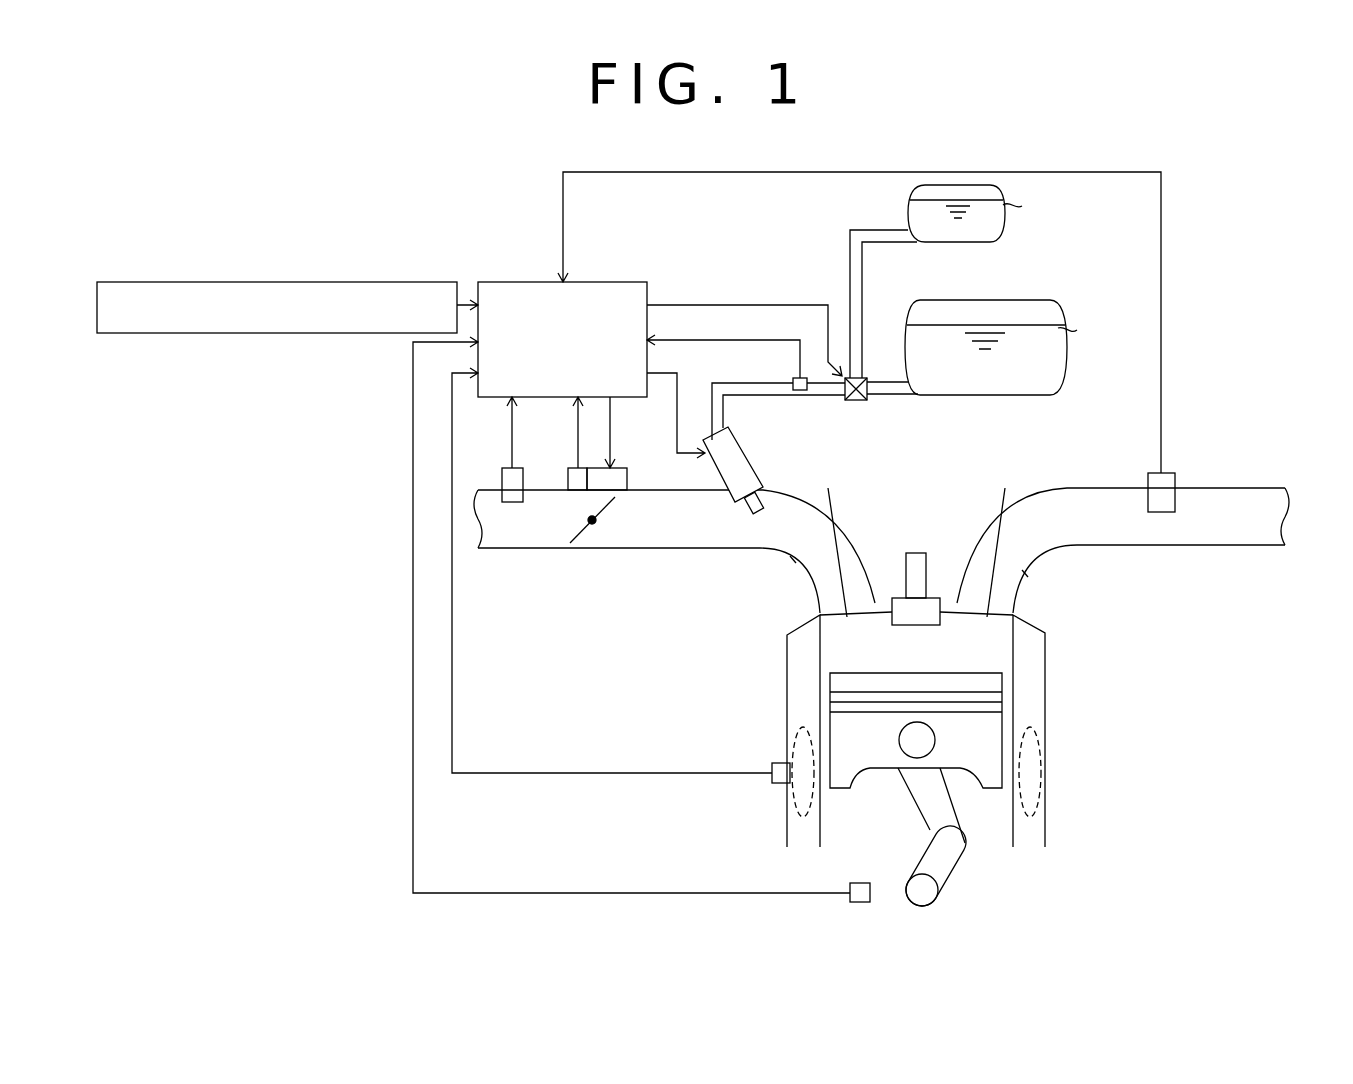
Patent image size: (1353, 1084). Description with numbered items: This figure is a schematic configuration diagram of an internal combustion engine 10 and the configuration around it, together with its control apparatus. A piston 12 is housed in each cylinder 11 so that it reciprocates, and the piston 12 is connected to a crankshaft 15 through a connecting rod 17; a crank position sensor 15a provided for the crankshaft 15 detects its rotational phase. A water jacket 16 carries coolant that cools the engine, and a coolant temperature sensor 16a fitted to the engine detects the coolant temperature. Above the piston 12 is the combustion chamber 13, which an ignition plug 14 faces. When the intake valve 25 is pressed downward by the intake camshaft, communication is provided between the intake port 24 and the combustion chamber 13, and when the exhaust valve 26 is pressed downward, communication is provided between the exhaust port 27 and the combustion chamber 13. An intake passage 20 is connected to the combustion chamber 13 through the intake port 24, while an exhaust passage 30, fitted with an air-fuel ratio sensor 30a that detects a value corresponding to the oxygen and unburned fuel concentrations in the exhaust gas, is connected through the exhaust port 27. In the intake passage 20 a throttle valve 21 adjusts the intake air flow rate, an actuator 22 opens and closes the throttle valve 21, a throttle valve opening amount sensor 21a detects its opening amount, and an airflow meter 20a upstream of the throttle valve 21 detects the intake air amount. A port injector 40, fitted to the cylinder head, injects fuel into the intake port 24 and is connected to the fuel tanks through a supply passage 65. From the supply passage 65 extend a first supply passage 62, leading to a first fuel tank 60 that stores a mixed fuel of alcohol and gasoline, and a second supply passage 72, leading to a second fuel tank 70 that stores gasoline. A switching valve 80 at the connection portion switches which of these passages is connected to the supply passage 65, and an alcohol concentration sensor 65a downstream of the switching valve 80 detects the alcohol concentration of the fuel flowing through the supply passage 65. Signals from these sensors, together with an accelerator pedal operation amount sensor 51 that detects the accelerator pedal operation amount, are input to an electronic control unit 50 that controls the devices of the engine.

The internal combustion engine 10 is at (1076, 719).
The cylinder 11 is at (1007, 653).
The piston 12 is at (1005, 681).
The combustion chamber 13 is at (937, 660).
The ignition plug 14 is at (916, 552).
The crankshaft 15 is at (938, 900).
The crank position sensor 15a is at (862, 882).
The water jacket 16 is at (1042, 772).
The coolant temperature sensor 16a is at (777, 785).
The connecting rod 17 is at (968, 840).
The intake passage 20 is at (500, 550).
The airflow meter 20a is at (502, 480).
The throttle valve 21 is at (583, 545).
The throttle valve opening amount sensor 21a is at (568, 480).
The actuator 22 is at (627, 478).
The intake port 24 is at (792, 560).
The intake valve 25 is at (830, 614).
The exhaust valve 26 is at (1000, 614).
The exhaust port 27 is at (1023, 572).
The exhaust passage 30 is at (1228, 547).
The air-fuel ratio sensor 30a is at (1176, 480).
The port injector 40 is at (752, 452).
The electronic control unit 50 is at (598, 282).
The accelerator pedal operation amount sensor 51 is at (438, 282).
The first fuel tank 60 is at (1063, 372).
The first supply passage 62 is at (890, 398).
The supply passage 65 is at (768, 397).
The alcohol concentration sensor 65a is at (793, 384).
The second fuel tank 70 is at (1005, 230).
The second supply passage 72 is at (862, 268).
The switching valve 80 is at (880, 367).